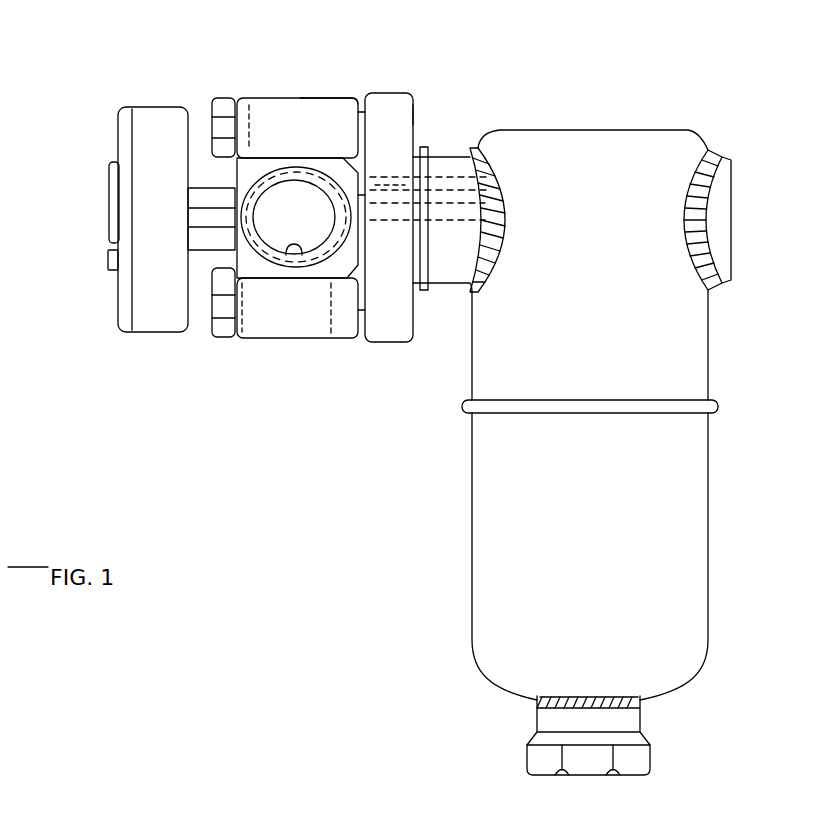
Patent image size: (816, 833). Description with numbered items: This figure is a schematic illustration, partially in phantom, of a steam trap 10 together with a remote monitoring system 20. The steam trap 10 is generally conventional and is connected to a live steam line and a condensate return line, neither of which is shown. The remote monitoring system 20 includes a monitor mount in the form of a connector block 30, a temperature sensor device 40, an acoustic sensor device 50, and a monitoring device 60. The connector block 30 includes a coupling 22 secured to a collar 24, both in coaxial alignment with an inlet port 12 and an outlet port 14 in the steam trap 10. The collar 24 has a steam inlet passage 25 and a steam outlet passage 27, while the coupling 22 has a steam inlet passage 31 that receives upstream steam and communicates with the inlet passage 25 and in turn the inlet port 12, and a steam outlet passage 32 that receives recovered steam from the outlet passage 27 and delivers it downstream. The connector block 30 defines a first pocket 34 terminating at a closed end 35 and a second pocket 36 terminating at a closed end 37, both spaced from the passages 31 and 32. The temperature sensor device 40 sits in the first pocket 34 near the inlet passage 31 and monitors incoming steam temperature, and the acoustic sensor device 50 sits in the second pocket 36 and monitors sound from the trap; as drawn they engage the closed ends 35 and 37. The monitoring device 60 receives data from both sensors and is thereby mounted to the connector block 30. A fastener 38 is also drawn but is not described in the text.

The steam trap 10 is at (468, 571).
The inlet port 12 is at (447, 230).
The outlet port 14 is at (452, 152).
The remote monitoring system 20 is at (310, 404).
The coupling 22 is at (320, 97).
The collar 24 is at (413, 115).
The steam inlet passage 25 is at (382, 230).
The steam outlet passage 27 is at (382, 185).
The connector block 30 is at (300, 98).
The steam inlet passage 31 is at (333, 340).
The steam outlet passage 32 is at (291, 250).
The first pocket 34 is at (249, 100).
The closed end 35 is at (248, 190).
The second pocket 36 is at (243, 336).
The closed end 37 is at (252, 292).
The fastener 38 is at (190, 250).
The temperature sensor device 40 is at (200, 186).
The acoustic sensor device 50 is at (190, 338).
The monitoring device 60 is at (117, 150).